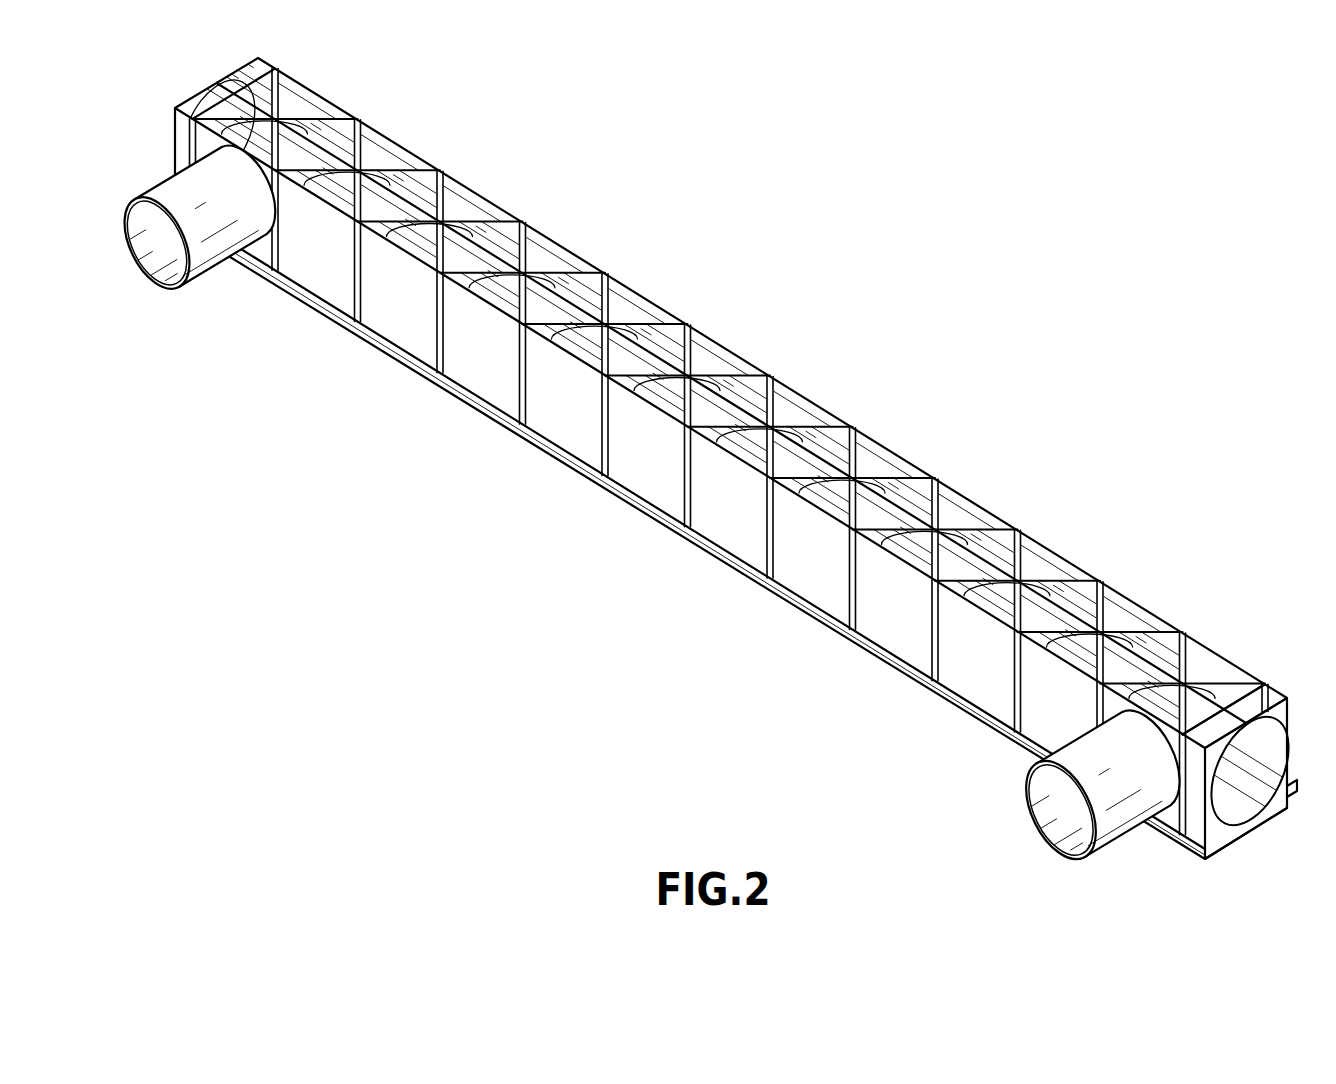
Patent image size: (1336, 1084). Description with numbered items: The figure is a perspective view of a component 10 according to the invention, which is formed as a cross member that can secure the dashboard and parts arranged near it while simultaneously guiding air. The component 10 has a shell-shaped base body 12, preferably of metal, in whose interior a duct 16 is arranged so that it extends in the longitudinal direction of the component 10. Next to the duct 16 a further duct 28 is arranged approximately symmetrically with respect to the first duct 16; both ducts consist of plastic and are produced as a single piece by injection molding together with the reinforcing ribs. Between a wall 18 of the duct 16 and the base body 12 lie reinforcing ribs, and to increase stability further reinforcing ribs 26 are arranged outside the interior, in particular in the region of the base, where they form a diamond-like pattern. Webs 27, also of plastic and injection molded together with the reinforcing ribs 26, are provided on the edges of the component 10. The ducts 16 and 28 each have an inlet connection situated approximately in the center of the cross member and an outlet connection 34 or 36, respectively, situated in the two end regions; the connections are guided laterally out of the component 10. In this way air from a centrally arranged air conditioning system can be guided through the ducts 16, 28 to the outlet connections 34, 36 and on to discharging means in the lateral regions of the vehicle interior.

The component 10 is at (807, 315).
The base body 12 is at (897, 637).
The duct 16 is at (1040, 614).
The wall 18 is at (1140, 661).
The reinforcing ribs 26 is at (1003, 540).
The webs 27 is at (959, 505).
The further duct 28 is at (490, 252).
The outlet connection 34 is at (1100, 808).
The outlet connection 36 is at (195, 242).